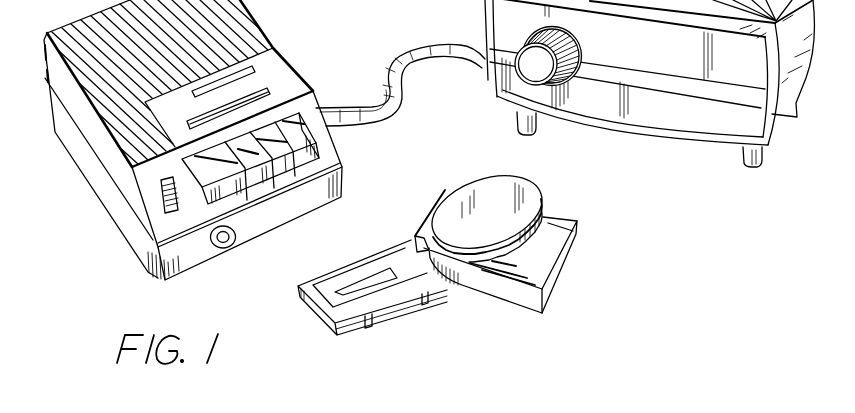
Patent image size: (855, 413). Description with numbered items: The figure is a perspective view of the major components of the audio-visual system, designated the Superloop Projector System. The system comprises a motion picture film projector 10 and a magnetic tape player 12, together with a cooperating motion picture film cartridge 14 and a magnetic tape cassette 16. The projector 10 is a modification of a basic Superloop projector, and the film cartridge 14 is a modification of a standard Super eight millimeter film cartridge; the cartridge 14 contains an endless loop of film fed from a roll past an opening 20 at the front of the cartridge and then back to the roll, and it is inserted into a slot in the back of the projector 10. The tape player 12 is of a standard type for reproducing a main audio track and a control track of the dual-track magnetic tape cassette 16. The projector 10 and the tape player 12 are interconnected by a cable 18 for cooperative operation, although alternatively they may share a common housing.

The motion picture film projector 10 is at (673, 117).
The magnetic tape player 12 is at (253, 25).
The motion picture film cartridge 14 is at (533, 197).
The magnetic tape cassette 16 is at (337, 285).
The cable 18 is at (399, 54).
The opening 20 is at (570, 262).